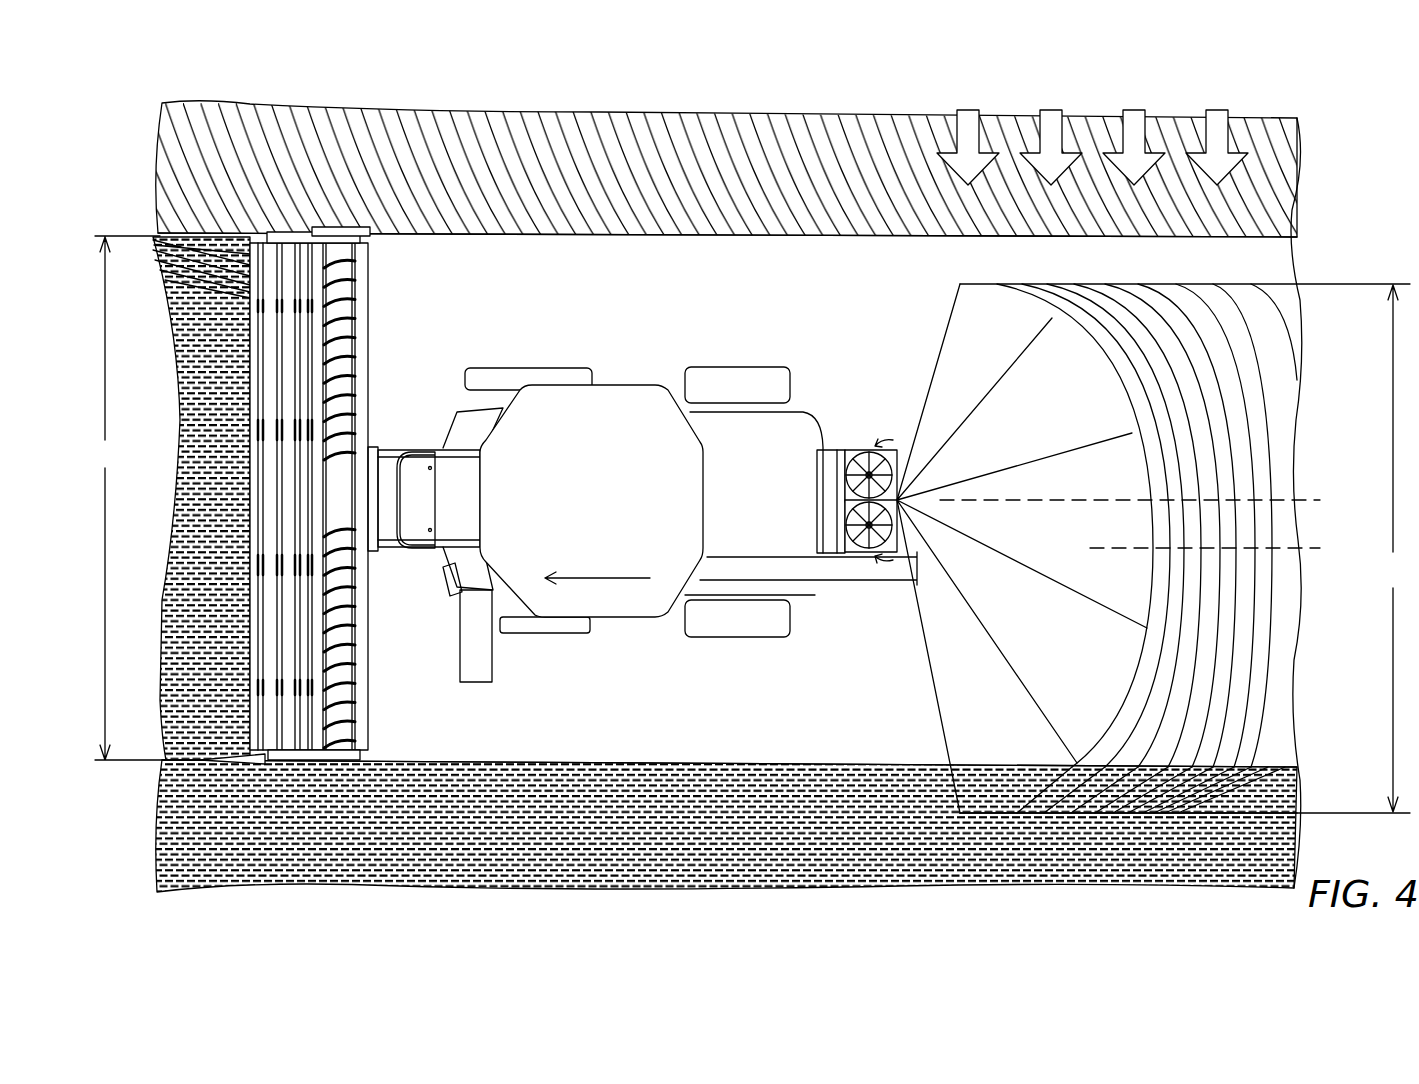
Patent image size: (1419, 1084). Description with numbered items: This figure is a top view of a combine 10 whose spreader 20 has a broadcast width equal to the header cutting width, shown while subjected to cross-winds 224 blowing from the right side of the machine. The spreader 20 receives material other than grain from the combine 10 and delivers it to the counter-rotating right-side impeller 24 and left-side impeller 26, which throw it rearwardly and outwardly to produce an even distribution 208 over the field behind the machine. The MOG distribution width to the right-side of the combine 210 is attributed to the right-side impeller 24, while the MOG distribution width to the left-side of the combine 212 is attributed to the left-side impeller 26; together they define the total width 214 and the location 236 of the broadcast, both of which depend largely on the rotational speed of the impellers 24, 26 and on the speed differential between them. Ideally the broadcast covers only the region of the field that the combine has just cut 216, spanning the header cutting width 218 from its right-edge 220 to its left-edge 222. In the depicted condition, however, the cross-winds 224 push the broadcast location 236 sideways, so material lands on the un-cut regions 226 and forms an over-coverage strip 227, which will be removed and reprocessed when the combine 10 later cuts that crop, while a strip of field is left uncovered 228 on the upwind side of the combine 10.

The combine 10 is at (612, 504).
The spreader 20 is at (900, 505).
The right-side impeller 24 is at (871, 455).
The left-side impeller 26 is at (871, 548).
The even distribution 208 is at (1232, 612).
The MOG distribution width to the right-side of the combine 210 is at (1275, 308).
The MOG distribution width to the left-side of the combine 212 is at (1283, 773).
The total width 214 is at (1396, 548).
The region of the field that the combine has just cut 216 is at (674, 704).
The header cutting width 218 is at (126, 498).
The right-edge 220 is at (140, 233).
The left-edge 222 is at (137, 762).
The cross-winds 224 is at (1138, 110).
The un-cut regions 226 is at (560, 850).
The over-coverage strip 227 is at (155, 270).
The strip of field left uncovered 228 is at (1262, 262).
The location 236 is at (1300, 562).